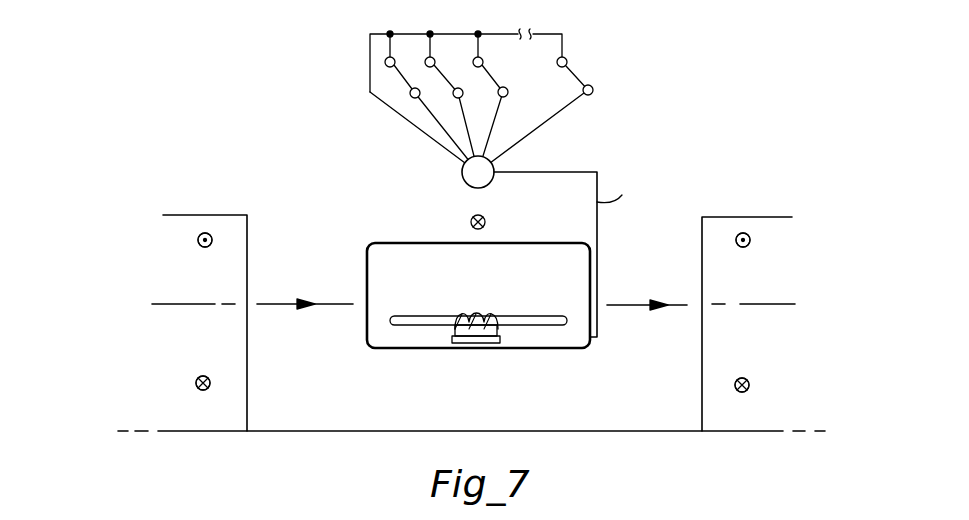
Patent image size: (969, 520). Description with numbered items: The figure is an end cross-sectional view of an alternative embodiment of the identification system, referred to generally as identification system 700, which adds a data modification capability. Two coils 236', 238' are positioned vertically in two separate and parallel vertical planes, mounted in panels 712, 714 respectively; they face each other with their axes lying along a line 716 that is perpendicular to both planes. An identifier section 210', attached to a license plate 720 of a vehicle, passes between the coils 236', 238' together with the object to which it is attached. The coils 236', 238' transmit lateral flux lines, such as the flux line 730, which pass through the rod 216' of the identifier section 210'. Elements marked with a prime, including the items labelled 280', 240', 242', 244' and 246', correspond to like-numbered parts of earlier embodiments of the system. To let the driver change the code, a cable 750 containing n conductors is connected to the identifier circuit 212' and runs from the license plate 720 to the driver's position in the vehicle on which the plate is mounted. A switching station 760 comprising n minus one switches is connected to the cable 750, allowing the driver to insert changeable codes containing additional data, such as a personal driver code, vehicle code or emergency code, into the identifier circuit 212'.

The identification system 700 is at (324, 442).
The panel 712 is at (190, 221).
The panel 714 is at (725, 222).
The line 716 is at (165, 303).
The license plate 720 is at (513, 243).
The flux line 730 is at (292, 304).
The cable 750 is at (523, 172).
The switching station 760 is at (415, 138).
The sensor 280' is at (446, 218).
The coil 236' is at (170, 309).
The coil 238' is at (774, 312).
The upper left sensor 240' is at (204, 256).
The lower left sensor 242' is at (191, 400).
The lower right sensor 244' is at (766, 398).
The upper right sensor 246' is at (738, 257).
The identifier section 210' is at (452, 347).
The identifier circuit 212' is at (478, 364).
The rod 216' is at (487, 348).